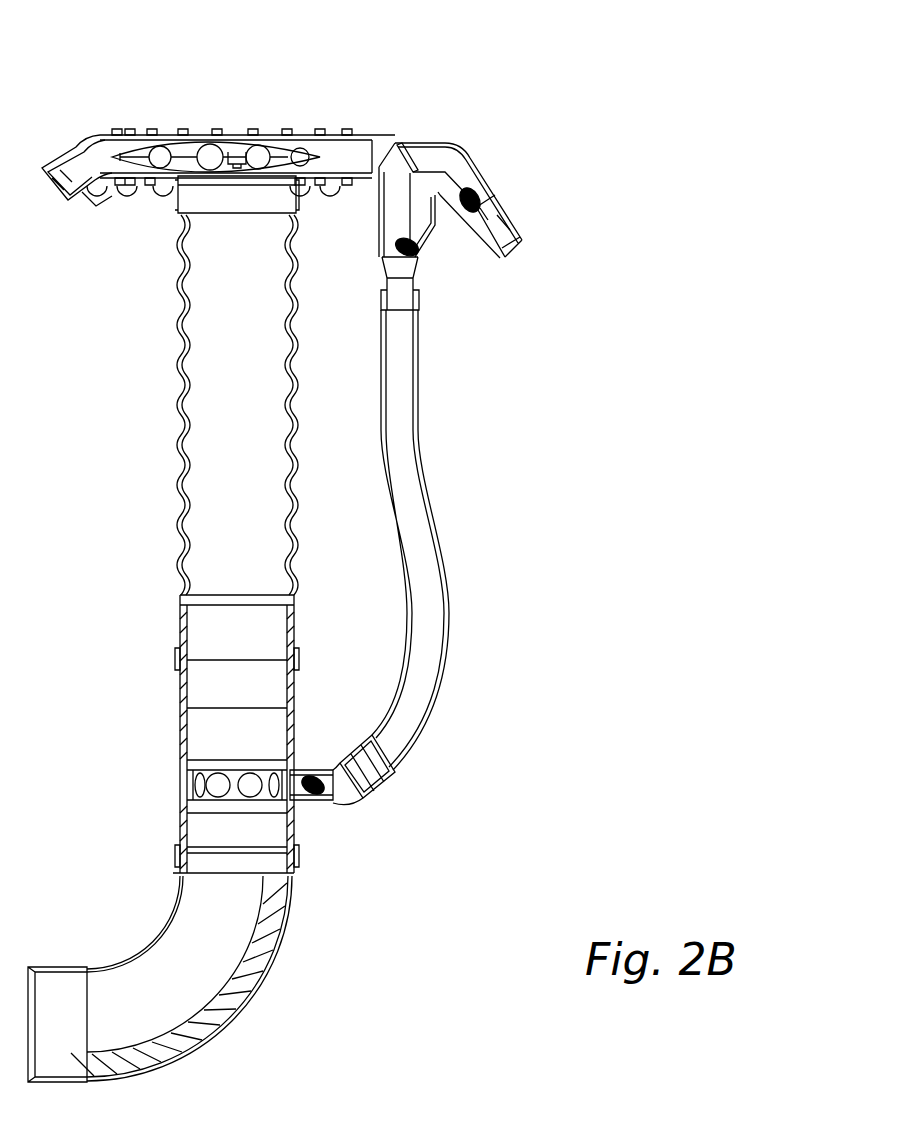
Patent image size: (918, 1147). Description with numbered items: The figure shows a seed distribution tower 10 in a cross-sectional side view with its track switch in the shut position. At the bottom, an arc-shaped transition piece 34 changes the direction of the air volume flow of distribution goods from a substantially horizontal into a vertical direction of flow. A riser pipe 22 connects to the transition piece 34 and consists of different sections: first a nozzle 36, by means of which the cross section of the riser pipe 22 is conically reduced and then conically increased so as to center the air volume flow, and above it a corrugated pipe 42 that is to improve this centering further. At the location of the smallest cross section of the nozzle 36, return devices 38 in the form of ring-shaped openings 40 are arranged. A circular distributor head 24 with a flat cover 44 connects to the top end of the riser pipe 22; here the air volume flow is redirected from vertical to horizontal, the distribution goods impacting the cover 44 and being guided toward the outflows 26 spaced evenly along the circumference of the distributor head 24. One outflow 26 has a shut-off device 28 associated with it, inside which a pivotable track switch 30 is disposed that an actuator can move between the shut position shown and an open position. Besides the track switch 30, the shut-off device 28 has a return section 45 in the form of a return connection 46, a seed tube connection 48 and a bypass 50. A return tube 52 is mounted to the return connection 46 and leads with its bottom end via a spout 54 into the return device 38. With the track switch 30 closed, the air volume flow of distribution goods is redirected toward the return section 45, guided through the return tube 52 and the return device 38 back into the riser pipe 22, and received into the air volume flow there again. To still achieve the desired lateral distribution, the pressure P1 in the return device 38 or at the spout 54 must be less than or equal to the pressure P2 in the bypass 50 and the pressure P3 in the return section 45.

The distribution tower 10 is at (331, 102).
The riser pipe 22 is at (124, 436).
The distributor head 24 is at (201, 128).
The flat cover 44 is at (241, 162).
The outflows 26 is at (68, 133).
The shut-off device 28 is at (482, 150).
The track switch 30 is at (405, 142).
The transition piece 34 is at (203, 971).
The nozzle 36 is at (157, 735).
The return devices 38 is at (180, 786).
The ring-shaped openings 40 is at (178, 785).
The corrugated pipe 42 is at (178, 330).
The return section 45 is at (371, 212).
The return connection 46 is at (420, 306).
The seed tube connection 48 is at (518, 238).
The bypass 50 is at (433, 222).
The return tube 52 is at (450, 600).
The spout 54 is at (398, 770).
The pressure in the return device P1 is at (316, 787).
The pressure in the bypass P2 is at (474, 206).
The pressure in the return section P3 is at (413, 251).